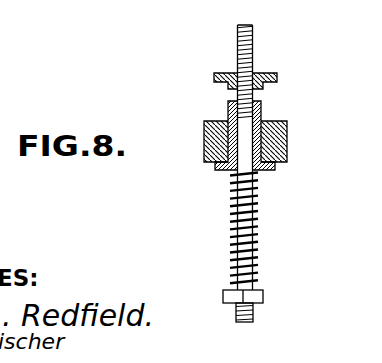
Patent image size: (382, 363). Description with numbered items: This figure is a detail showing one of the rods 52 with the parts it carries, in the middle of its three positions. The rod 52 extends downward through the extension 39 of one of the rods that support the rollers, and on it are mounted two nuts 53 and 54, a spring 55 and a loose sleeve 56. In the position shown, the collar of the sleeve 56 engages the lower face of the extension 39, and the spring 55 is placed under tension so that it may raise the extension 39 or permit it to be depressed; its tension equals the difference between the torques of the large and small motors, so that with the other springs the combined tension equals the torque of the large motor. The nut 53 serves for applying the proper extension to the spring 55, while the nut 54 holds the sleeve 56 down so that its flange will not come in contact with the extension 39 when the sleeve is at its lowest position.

The rod 52 is at (237, 34).
The nut 54 is at (279, 78).
The loose sleeve 56 is at (228, 108).
The extension 39 is at (288, 141).
The spring 55 is at (258, 228).
The nut 53 is at (264, 296).